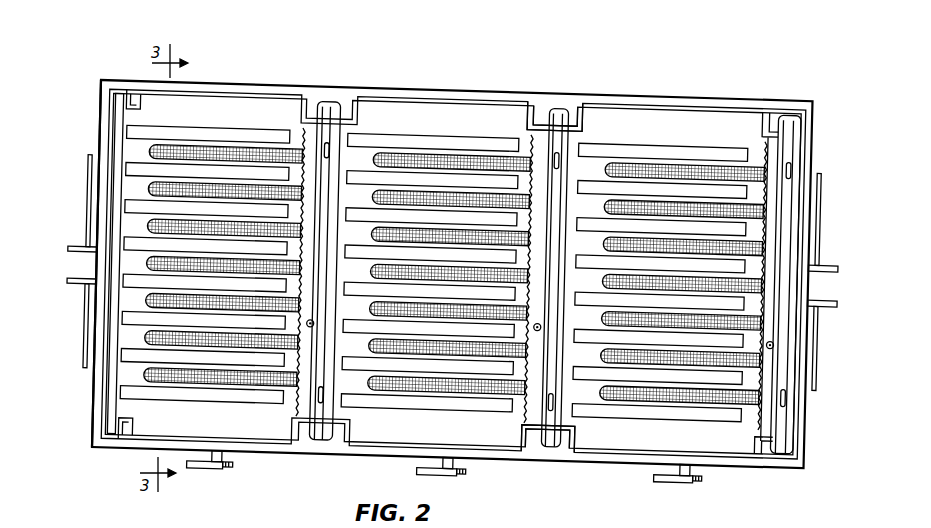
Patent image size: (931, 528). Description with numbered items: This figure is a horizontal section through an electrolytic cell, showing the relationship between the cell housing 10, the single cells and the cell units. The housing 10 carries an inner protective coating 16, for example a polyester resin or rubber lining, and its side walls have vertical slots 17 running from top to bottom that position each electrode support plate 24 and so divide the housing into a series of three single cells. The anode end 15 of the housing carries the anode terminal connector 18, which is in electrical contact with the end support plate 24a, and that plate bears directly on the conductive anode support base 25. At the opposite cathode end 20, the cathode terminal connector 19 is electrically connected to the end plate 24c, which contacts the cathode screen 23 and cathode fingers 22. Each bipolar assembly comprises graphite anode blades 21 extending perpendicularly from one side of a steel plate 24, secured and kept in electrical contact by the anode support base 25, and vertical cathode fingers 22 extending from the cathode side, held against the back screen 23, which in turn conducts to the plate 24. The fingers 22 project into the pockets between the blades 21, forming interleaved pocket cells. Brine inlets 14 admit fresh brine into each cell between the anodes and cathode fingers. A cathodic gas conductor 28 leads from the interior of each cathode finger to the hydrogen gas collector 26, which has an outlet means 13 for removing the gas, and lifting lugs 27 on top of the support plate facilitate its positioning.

The cell housing 10 is at (418, 92).
The outlet means 13 is at (775, 345).
The brine inlets 14 is at (212, 468).
The anode end 15 is at (100, 116).
The protective coating 16 is at (451, 110).
The vertical slots 17 is at (567, 453).
The anode terminal connector 18 is at (78, 245).
The cathode terminal connector 19 is at (828, 265).
The cathode end 20 is at (813, 147).
The graphite anode blades 21 is at (154, 133).
The cathode fingers 22 is at (204, 152).
The cathode screen 23 is at (303, 128).
The electrode support plate 24 is at (330, 110).
The electrode support plate 24a is at (118, 402).
The plate 24c is at (784, 422).
The anode support base 25 is at (125, 149).
The hydrogen gas collector 26 is at (770, 326).
The lifting lugs 27 is at (325, 396).
The cathodic gas conductor 28 is at (538, 132).